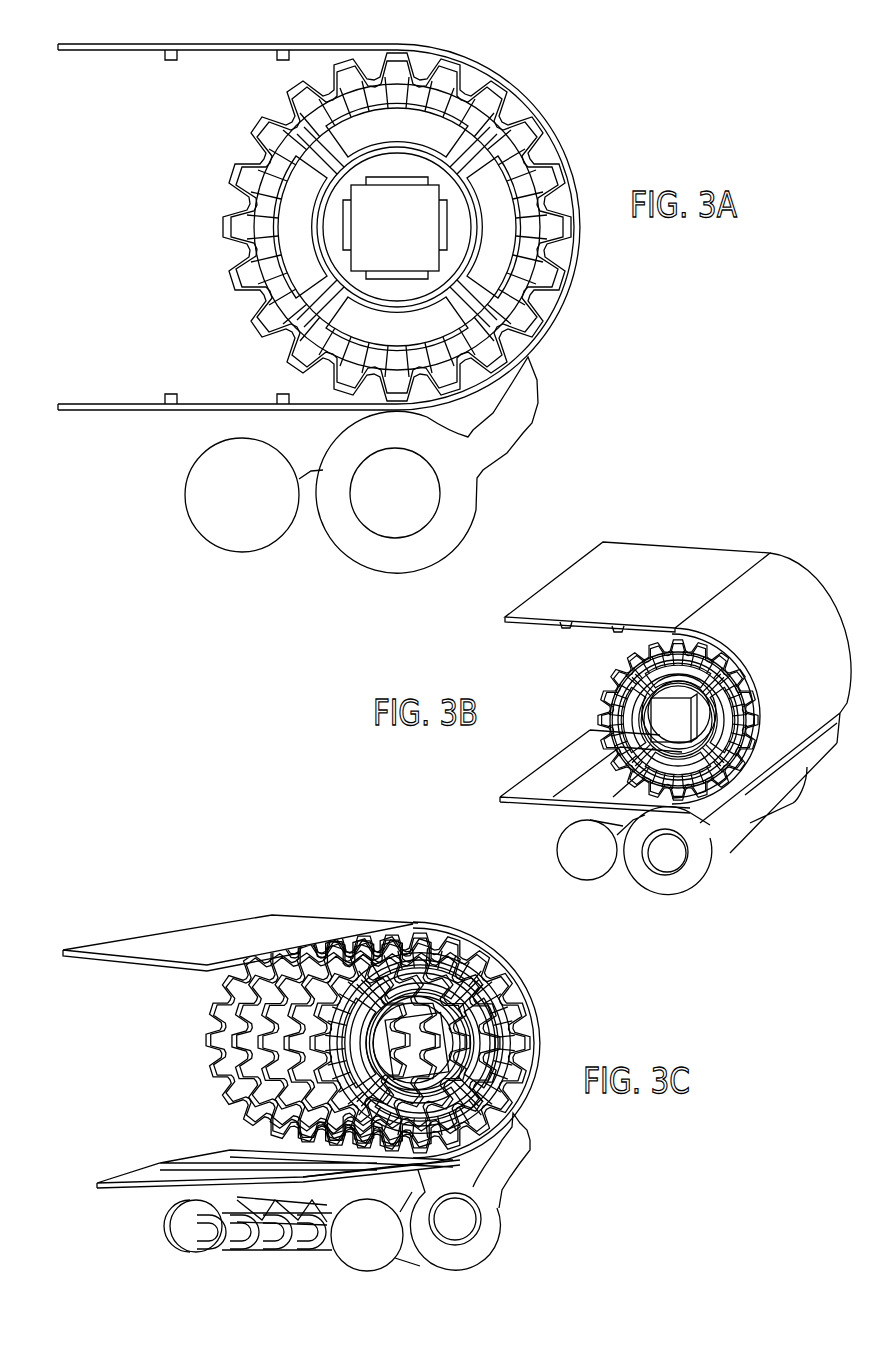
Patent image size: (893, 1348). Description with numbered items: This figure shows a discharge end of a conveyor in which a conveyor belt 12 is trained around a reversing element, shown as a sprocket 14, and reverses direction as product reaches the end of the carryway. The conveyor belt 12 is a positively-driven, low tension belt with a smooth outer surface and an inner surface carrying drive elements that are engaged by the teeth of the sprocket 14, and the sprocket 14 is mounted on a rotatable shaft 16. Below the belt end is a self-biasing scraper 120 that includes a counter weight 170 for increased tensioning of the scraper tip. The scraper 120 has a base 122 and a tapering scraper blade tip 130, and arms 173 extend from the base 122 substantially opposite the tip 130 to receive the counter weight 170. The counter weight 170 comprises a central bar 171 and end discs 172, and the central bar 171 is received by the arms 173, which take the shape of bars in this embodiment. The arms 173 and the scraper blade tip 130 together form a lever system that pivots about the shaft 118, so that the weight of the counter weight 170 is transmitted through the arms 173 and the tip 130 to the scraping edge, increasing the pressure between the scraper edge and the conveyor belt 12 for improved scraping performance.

In FIG. 3A, the conveyor belt 12 is at (448, 46).
In FIG. 3B, the conveyor belt 12 is at (672, 557).
In FIG. 3B, the sprocket 14 is at (597, 690).
In FIG. 3C, the sprocket 14 is at (198, 1042).
In FIG. 3A, the rotatable shaft 16 is at (401, 238).
In FIG. 3B, the rotatable shaft 16 is at (679, 712).
In FIG. 3A, the shaft 118 is at (411, 506).
In FIG. 3B, the shaft 118 is at (669, 864).
In FIG. 3C, the shaft 118 is at (453, 1223).
In FIG. 3A, the self-biasing scraper 120 is at (385, 536).
In FIG. 3B, the self-biasing scraper 120 is at (687, 884).
In FIG. 3C, the self-biasing scraper 120 is at (496, 1248).
In FIG. 3A, the base 122 is at (420, 553).
In FIG. 3A, the tapering scraper blade tip 130 is at (502, 427).
In FIG. 3A, the counter weight 170 is at (232, 520).
In FIG. 3B, the counter weight 170 is at (571, 842).
In FIG. 3C, the counter weight 170 is at (333, 1275).
In FIG. 3C, the central bar 171 is at (290, 1228).
In FIG. 3C, the end discs 172 is at (389, 1256).
In FIG. 3A, the arms 173 is at (305, 507).
In FIG. 3C, the arms 173 is at (245, 1245).